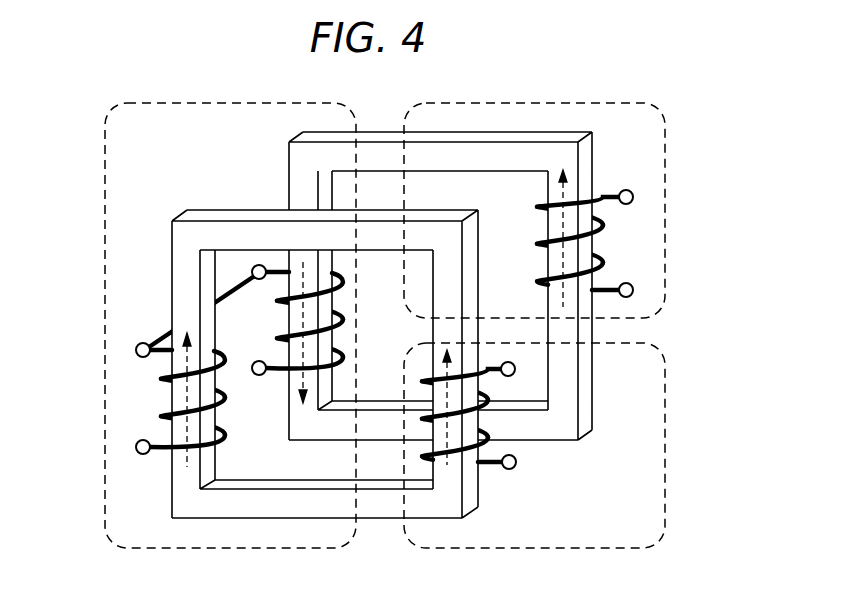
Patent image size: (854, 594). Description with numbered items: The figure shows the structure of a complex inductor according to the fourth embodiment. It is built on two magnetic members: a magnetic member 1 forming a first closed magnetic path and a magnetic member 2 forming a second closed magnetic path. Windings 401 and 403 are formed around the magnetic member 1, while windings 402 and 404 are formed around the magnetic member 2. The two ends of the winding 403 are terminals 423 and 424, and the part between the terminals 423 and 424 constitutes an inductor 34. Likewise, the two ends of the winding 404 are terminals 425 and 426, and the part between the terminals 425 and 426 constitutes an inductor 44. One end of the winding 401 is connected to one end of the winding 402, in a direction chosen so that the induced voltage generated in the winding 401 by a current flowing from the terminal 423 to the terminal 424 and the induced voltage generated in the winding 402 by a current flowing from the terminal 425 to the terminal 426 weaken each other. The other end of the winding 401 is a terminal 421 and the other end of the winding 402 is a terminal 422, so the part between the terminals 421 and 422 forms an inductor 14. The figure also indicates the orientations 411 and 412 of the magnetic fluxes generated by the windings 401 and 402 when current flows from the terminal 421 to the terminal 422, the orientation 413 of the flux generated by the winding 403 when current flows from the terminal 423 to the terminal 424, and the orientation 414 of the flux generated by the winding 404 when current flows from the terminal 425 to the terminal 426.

The magnetic member 1 is at (180, 214).
The magnetic member 2 is at (290, 136).
The inductor 14 is at (105, 258).
The inductor 34 is at (665, 440).
The inductor 44 is at (665, 205).
The winding 401 is at (222, 442).
The winding 402 is at (283, 333).
The winding 403 is at (476, 411).
The winding 404 is at (537, 247).
The orientation of magnetic flux 411 is at (187, 468).
The orientation of magnetic flux 412 is at (303, 383).
The orientation of magnetic flux 413 is at (447, 463).
The orientation of magnetic flux 414 is at (562, 195).
The terminal 421 is at (141, 440).
The terminal 422 is at (258, 361).
The terminal 423 is at (517, 464).
The terminal 424 is at (514, 375).
The terminal 425 is at (631, 282).
The terminal 426 is at (631, 189).